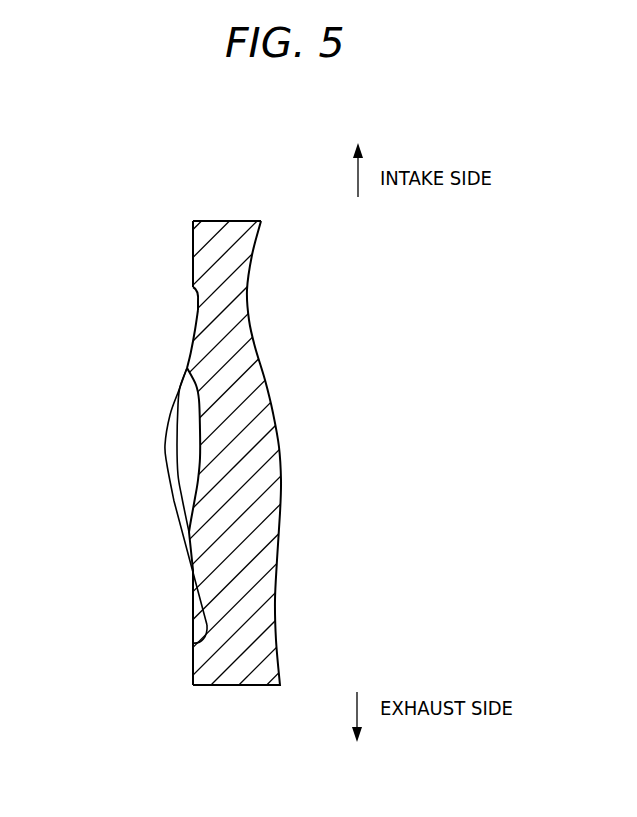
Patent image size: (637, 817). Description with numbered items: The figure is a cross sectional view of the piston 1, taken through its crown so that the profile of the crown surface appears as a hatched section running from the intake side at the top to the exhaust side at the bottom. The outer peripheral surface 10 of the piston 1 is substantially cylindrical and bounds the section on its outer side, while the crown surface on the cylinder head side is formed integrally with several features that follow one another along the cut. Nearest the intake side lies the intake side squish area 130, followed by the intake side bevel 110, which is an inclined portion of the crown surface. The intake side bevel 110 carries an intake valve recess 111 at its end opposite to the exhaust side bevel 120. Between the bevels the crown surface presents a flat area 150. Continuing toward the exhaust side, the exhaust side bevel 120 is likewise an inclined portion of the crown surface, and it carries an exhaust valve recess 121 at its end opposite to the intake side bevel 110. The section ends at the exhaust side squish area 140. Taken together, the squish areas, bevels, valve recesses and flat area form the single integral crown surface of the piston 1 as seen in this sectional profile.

The piston 1 is at (147, 200).
The outer peripheral surface 10 is at (232, 221).
The intake side squish area 130 is at (193, 242).
The intake valve recess 111 is at (198, 310).
The intake side bevel 110 is at (180, 387).
The flat area 150 is at (198, 447).
The exhaust side bevel 120 is at (174, 501).
The exhaust valve recess 121 is at (207, 625).
The exhaust side squish area 140 is at (193, 664).